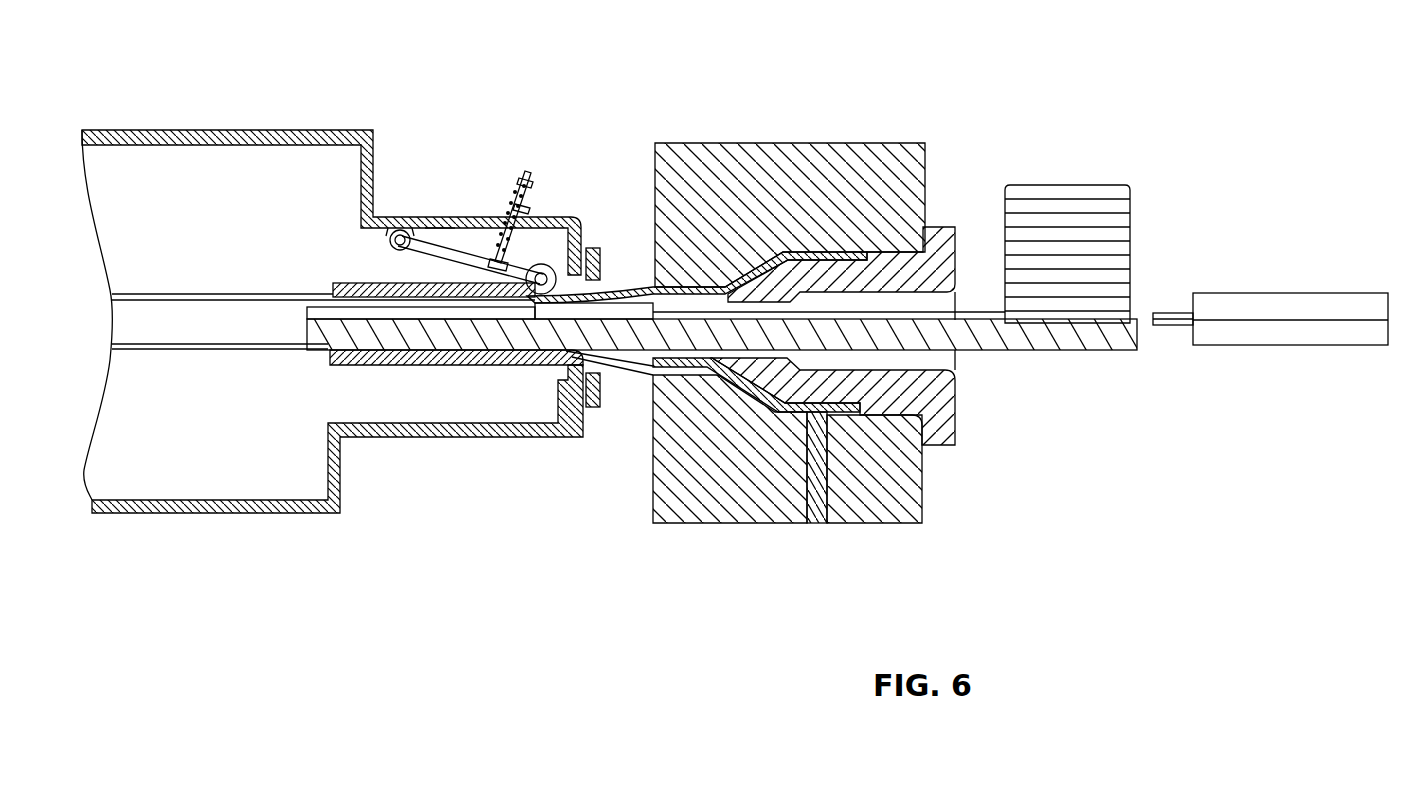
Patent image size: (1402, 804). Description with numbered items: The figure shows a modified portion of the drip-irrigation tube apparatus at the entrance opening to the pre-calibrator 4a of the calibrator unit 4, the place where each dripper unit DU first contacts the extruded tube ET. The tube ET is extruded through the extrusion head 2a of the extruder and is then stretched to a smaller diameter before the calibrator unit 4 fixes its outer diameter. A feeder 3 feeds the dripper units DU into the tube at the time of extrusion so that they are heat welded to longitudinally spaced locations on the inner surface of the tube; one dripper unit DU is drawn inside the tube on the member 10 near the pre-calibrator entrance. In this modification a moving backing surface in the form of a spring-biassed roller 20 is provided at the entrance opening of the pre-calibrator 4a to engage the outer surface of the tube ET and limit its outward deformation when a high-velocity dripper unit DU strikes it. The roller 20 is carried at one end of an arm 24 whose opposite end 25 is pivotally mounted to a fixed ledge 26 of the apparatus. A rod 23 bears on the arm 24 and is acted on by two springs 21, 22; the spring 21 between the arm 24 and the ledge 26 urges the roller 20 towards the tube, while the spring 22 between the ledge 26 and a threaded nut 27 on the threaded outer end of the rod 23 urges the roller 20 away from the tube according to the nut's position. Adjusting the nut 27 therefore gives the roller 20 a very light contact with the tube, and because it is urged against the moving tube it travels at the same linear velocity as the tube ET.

The calibrator unit 4 is at (525, 70).
The extruded tube ET is at (332, 303).
The opposite end 25 is at (403, 218).
The fixed ledge 26 is at (440, 218).
The threaded nut 27 is at (513, 190).
The rod 23 is at (529, 172).
The spring 22 is at (523, 208).
The pre-calibrator 4a is at (588, 248).
The arm 24 is at (478, 208).
The spring-biassed roller 20 is at (557, 280).
The spring 21 is at (514, 246).
The extrusion head 2a is at (855, 150).
The dripper unit DU is at (1102, 188).
The rod 10 is at (623, 340).
The feeder 3 is at (1275, 340).